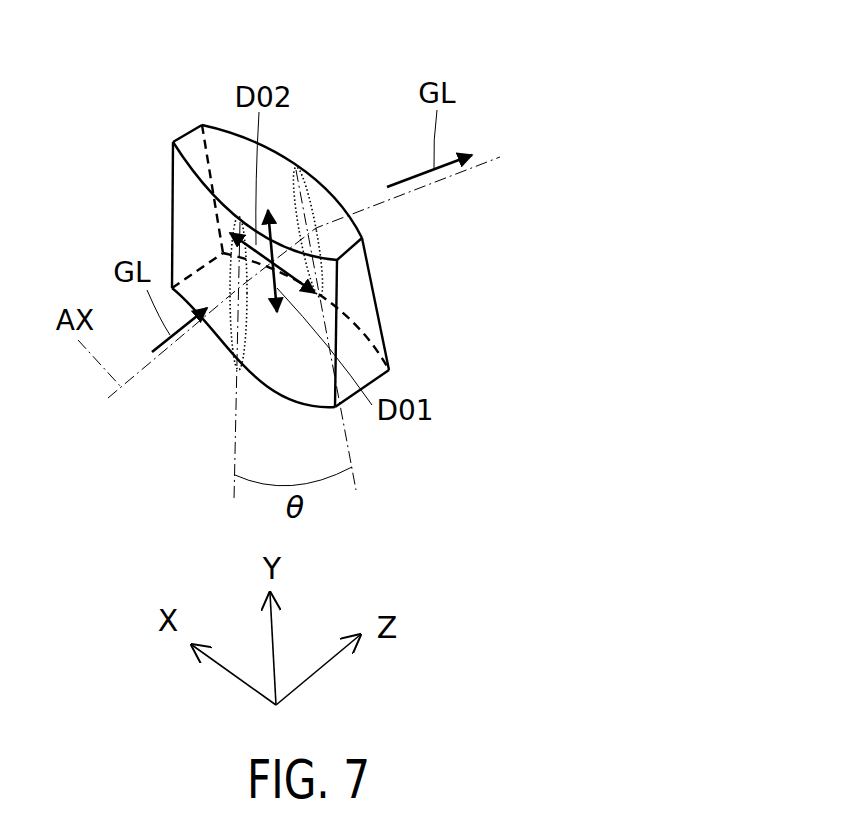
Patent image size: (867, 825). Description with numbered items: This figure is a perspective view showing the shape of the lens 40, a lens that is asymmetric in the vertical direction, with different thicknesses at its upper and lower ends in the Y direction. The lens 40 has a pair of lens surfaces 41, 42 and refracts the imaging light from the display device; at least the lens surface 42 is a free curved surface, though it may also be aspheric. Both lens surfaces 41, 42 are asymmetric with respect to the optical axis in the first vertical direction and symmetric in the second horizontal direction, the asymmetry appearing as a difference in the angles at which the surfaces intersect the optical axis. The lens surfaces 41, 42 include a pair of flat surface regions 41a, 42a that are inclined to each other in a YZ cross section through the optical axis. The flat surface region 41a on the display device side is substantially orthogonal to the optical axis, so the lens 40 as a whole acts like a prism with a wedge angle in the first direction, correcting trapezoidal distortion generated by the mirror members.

The lens 40 is at (269, 267).
The lens surface 41 is at (222, 340).
The flat surface region 41a is at (227, 273).
The lens surface 42 is at (320, 210).
The flat surface region 42a is at (318, 242).